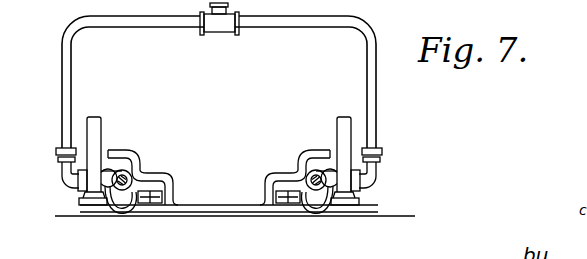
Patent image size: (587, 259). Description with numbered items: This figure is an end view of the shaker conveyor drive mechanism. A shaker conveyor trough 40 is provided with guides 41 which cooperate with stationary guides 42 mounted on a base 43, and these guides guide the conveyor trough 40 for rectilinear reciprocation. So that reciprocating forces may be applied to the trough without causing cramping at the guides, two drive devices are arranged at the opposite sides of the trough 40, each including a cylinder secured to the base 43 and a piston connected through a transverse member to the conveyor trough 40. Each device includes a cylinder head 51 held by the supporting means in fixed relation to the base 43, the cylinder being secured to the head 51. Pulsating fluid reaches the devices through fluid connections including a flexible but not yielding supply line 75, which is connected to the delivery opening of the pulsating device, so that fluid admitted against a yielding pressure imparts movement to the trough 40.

The supply line 75 is at (311, 17).
The cylinder head 51 is at (77, 183).
The shaker conveyor trough 40 is at (169, 185).
The guides 41 is at (278, 210).
The stationary guides 42 is at (298, 210).
The base 43 is at (341, 211).